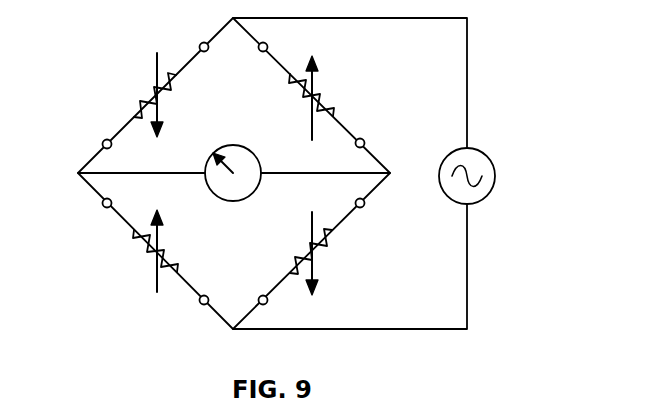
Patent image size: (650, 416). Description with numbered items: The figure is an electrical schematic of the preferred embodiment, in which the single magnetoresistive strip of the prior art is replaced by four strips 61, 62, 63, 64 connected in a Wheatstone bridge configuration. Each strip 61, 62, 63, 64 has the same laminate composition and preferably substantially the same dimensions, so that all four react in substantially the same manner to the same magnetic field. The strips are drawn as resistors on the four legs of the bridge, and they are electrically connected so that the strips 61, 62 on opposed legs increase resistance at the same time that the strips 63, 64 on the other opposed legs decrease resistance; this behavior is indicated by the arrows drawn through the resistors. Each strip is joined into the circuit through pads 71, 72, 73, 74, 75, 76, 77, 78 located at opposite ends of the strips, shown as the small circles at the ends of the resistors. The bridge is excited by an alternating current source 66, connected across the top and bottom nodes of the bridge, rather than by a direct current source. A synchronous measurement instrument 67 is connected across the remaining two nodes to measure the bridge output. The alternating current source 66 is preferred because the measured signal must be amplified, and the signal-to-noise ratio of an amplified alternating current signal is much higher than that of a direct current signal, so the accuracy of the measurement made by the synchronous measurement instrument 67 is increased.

The strip 61 is at (321, 98).
The strip 62 is at (145, 251).
The strip 63 is at (327, 253).
The strip 64 is at (144, 95).
The alternating current source 66 is at (484, 176).
The synchronous measurement instrument 67 is at (233, 157).
The pad 71 is at (363, 139).
The pad 72 is at (259, 50).
The pad 73 is at (104, 208).
The pad 74 is at (202, 305).
The pad 75 is at (363, 208).
The pad 76 is at (259, 299).
The pad 77 is at (104, 139).
The pad 78 is at (202, 43).